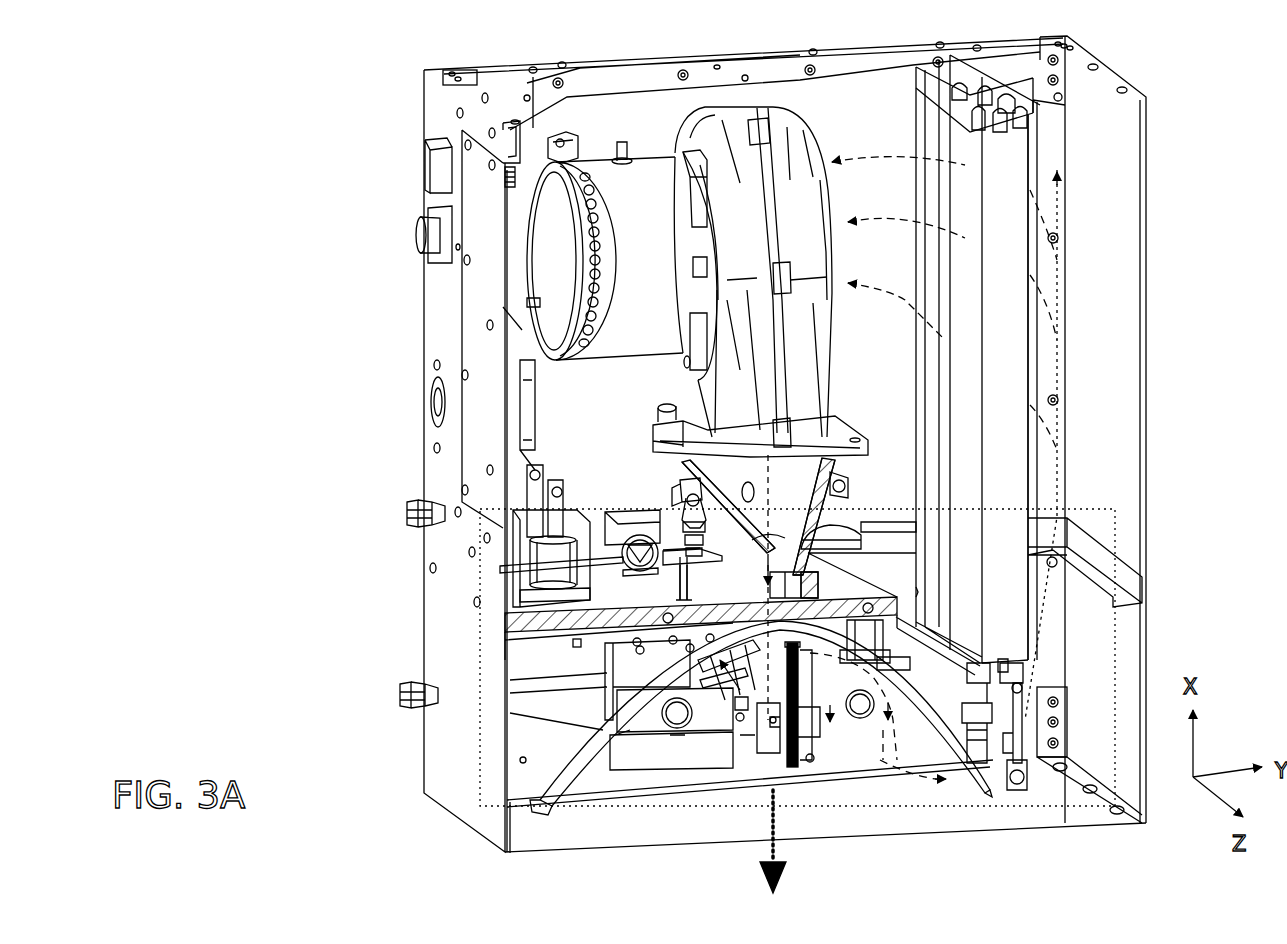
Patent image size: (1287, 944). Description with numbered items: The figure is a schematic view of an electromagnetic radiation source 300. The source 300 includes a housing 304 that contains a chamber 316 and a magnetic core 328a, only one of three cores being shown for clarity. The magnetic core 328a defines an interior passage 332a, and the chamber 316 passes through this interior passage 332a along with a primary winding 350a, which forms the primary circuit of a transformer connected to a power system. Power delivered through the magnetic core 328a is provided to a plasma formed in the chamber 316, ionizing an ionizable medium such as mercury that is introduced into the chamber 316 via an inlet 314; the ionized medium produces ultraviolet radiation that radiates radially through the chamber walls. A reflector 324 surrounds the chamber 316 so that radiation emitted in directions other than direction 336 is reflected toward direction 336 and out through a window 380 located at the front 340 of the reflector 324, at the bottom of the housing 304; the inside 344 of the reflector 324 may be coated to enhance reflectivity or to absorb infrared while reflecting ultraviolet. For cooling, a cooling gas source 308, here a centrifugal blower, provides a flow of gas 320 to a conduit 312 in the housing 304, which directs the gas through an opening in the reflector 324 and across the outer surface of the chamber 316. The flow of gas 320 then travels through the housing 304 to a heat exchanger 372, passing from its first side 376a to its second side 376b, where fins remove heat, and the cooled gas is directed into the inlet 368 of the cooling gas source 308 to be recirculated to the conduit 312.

The electromagnetic radiation source 300 is at (350, 550).
The housing 304 is at (422, 334).
The cooling gas source 308 is at (826, 140).
The conduit 312 is at (673, 477).
The inlet 314 is at (955, 724).
The chamber 316 is at (860, 718).
The flow of gas 320 is at (897, 292).
The reflector 324 is at (595, 744).
The magnetic core 328a is at (605, 665).
The interior passage 332a is at (655, 725).
The direction 336 is at (768, 830).
The front 340 is at (548, 812).
The inside 344 is at (830, 742).
The primary winding 350a is at (680, 593).
The inlet 368 is at (828, 252).
The heat exchanger 372 is at (1029, 359).
The first side 376a is at (1028, 462).
The second side 376b is at (947, 443).
The window 380 is at (620, 850).